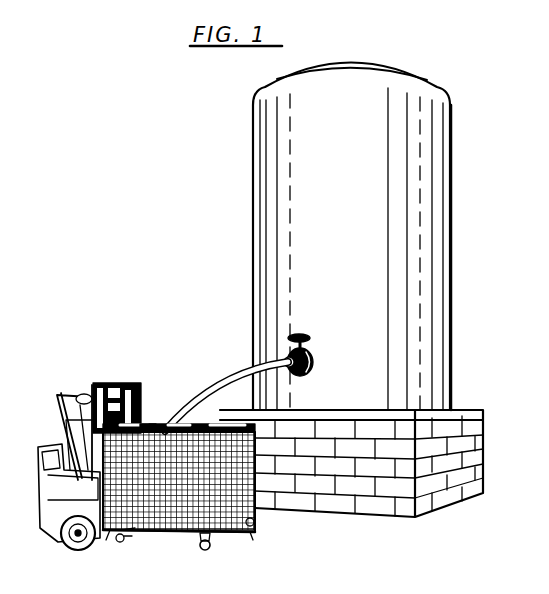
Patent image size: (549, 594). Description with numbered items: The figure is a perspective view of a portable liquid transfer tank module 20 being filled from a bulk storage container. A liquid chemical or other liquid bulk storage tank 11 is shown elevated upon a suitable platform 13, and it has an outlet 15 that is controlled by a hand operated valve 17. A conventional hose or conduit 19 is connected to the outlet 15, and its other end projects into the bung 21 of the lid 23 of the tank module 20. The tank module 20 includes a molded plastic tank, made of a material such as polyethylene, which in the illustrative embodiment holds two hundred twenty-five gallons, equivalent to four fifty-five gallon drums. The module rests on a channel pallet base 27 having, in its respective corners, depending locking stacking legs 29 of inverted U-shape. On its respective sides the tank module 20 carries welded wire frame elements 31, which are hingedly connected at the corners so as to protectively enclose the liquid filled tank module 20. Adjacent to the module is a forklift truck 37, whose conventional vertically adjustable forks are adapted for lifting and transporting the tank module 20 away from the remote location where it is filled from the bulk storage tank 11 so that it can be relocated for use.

The bulk storage tank 11 is at (276, 193).
The platform 13 is at (480, 447).
The outlet 15 is at (314, 363).
The hand operated valve 17 is at (302, 340).
The hose 19 is at (230, 384).
The portable liquid transfer tank module 20 is at (201, 470).
The bung 21 is at (160, 428).
The lid 23 is at (147, 424).
The channel pallet base 27 is at (164, 533).
The locking stacking legs 29 is at (206, 549).
The welded wire frame elements 31 is at (128, 531).
The forklift truck 37 is at (55, 527).